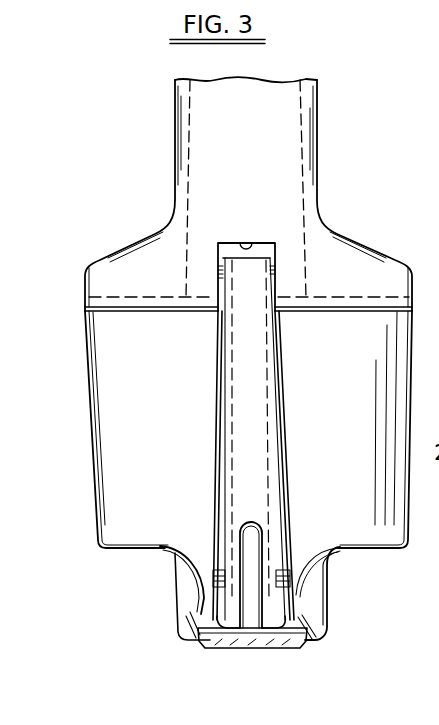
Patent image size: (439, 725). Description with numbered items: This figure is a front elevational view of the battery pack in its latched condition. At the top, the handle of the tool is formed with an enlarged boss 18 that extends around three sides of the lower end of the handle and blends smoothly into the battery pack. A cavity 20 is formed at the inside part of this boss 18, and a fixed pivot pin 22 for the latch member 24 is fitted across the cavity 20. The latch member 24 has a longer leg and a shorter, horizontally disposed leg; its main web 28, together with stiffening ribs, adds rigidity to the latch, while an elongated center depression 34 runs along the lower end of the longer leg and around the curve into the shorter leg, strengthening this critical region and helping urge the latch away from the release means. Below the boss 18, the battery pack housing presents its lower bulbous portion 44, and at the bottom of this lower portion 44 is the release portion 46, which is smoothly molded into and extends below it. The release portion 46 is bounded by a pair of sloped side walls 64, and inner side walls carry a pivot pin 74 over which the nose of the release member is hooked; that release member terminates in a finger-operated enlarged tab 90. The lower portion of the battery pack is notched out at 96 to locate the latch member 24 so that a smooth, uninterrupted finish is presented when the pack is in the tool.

The enlarged boss 18 is at (107, 244).
The cavity 20 is at (239, 243).
The fixed pivot pin 22 is at (218, 268).
The latch member 24 is at (225, 420).
The main web 28 is at (245, 364).
The elongated center depression 34 is at (250, 598).
The lower bulbous portion 44 is at (117, 462).
The release portion 46 is at (338, 583).
The side walls 64 is at (190, 588).
The pivot pin 74 is at (278, 573).
The enlarged tab 90 is at (253, 637).
The notch 96 is at (224, 503).